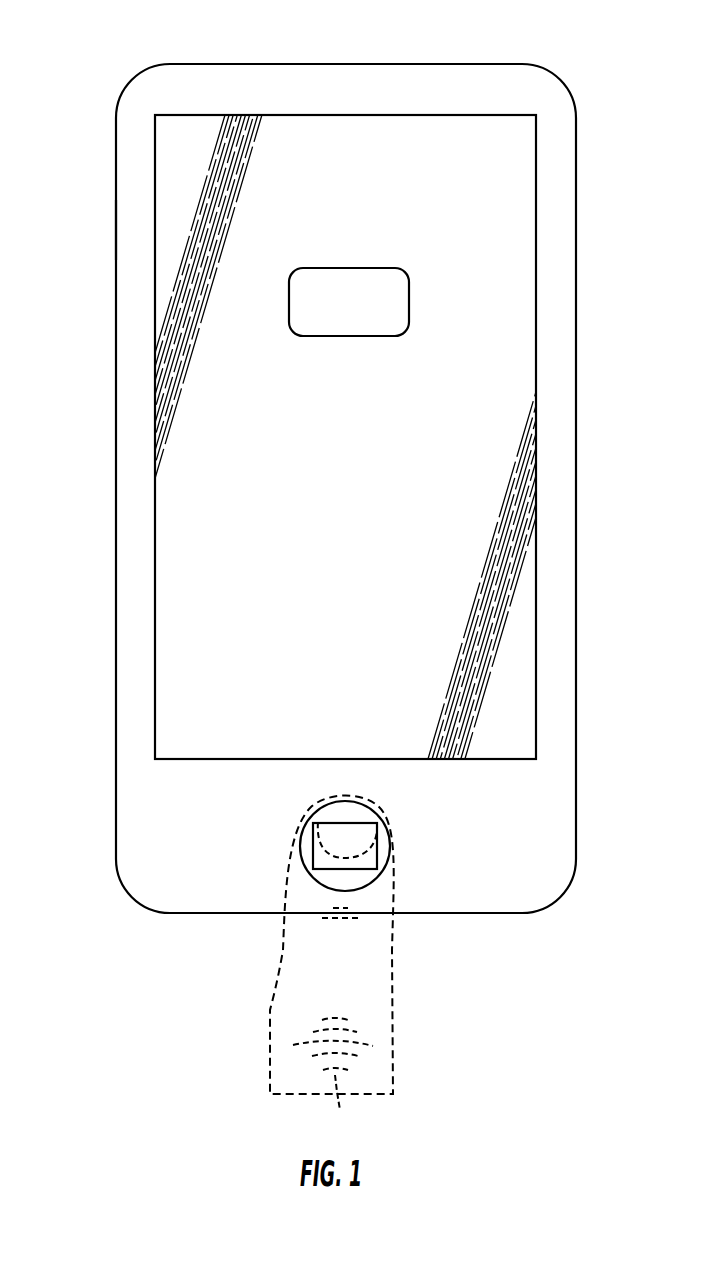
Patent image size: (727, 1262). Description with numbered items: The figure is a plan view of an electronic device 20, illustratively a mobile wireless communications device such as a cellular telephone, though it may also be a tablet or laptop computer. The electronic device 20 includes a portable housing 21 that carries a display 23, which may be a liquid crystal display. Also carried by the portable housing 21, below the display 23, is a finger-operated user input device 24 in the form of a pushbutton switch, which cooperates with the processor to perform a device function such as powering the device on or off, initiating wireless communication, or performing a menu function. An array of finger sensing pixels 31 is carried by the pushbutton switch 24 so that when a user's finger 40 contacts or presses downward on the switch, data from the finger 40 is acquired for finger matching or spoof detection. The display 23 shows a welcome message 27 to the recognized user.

The electronic device 20 is at (98, 87).
The housing 21 is at (115, 230).
The display 23 is at (157, 274).
The pushbutton switch 24 is at (305, 866).
The welcome message 27 is at (385, 268).
The finger biometric sensor 31 is at (313, 836).
The finger 40 is at (282, 948).